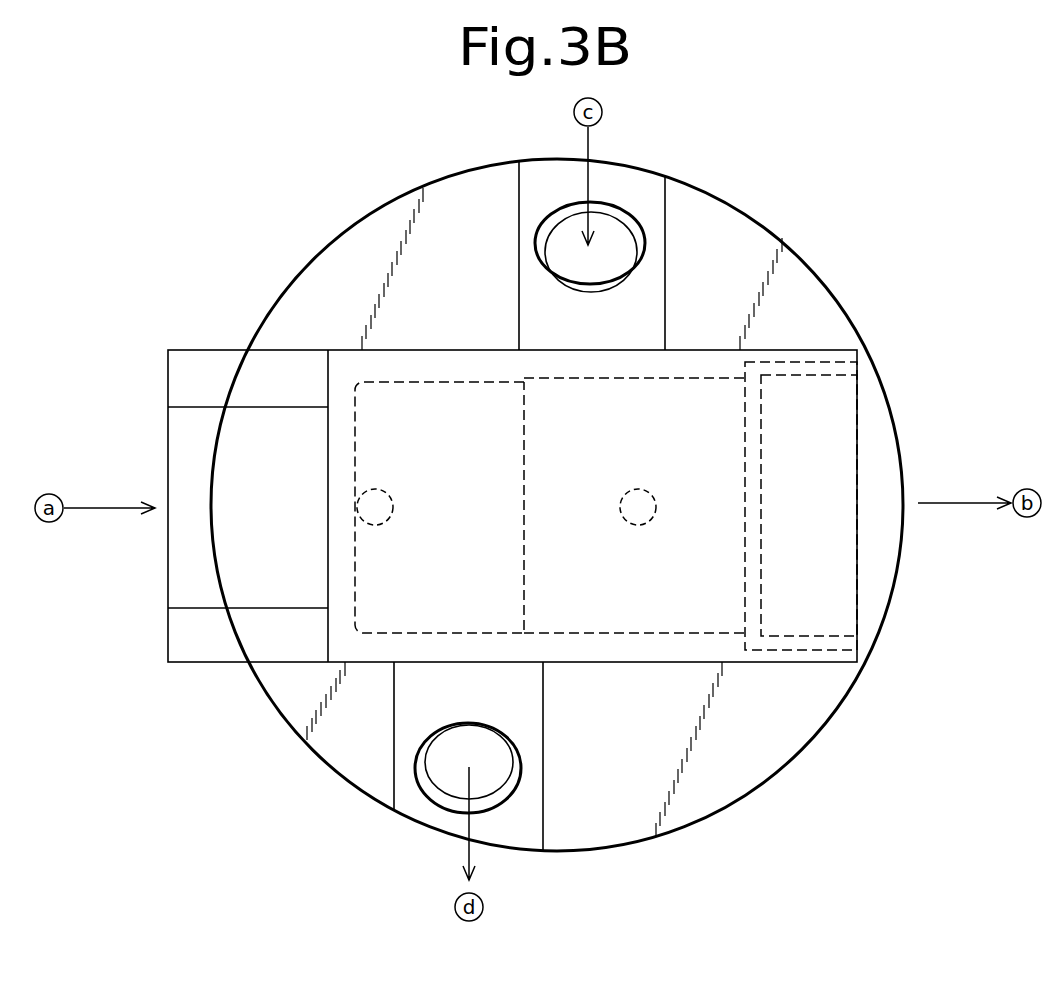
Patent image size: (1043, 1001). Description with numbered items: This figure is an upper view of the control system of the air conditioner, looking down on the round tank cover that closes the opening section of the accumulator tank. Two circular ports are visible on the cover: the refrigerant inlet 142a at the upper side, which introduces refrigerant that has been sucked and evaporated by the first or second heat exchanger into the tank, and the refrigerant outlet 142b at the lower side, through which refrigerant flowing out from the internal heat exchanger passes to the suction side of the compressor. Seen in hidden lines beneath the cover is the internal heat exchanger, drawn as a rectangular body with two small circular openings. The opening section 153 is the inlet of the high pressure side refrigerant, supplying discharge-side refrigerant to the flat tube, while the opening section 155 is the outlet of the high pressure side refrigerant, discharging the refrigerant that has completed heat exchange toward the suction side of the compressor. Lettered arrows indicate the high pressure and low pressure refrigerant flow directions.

The refrigerant inlet 142a is at (633, 237).
The refrigerant outlet 142b is at (438, 790).
The opening section 153 is at (385, 521).
The opening section 155 is at (647, 521).